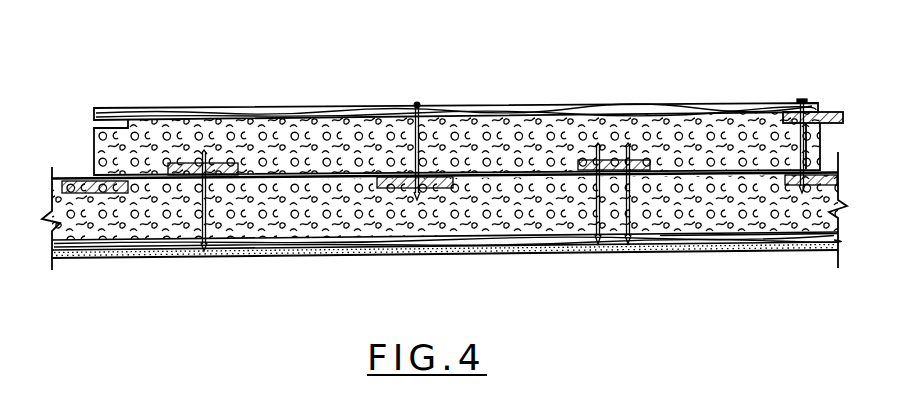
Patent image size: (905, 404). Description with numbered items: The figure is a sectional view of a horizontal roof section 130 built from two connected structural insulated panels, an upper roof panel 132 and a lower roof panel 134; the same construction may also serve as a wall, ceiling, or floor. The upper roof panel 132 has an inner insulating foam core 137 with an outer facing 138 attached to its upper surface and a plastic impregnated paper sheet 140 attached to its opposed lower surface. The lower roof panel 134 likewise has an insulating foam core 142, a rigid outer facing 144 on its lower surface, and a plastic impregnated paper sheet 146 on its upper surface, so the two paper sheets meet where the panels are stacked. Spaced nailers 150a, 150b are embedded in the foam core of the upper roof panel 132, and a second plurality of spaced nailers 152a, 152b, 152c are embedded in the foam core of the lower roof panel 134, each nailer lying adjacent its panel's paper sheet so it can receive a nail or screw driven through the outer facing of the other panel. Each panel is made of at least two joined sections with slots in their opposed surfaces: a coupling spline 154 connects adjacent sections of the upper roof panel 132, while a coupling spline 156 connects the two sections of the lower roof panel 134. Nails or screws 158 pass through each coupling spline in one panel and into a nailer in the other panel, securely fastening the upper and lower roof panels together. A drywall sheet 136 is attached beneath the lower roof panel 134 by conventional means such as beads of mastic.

The horizontal roof section 130 is at (346, 283).
The upper roof panel 132 is at (88, 153).
The lower roof panel 134 is at (47, 236).
The drywall sheet 136 is at (190, 257).
The inner insulating foam core 137 is at (313, 137).
The outer facing 138 is at (160, 110).
The plastic impregnated paper sheet 140 is at (518, 168).
The insulating foam core 142 is at (717, 218).
The rigid outer facing 144 is at (822, 236).
The plastic impregnated paper sheet 146 is at (710, 183).
The nailer 150a is at (185, 164).
The nailer 150b is at (620, 158).
The nailer 152a is at (91, 191).
The nailer 152b is at (400, 180).
The nailer 152c is at (793, 186).
The coupling spline 154 is at (790, 112).
The coupling spline 156 is at (600, 241).
The nails or screws 158 is at (410, 127).